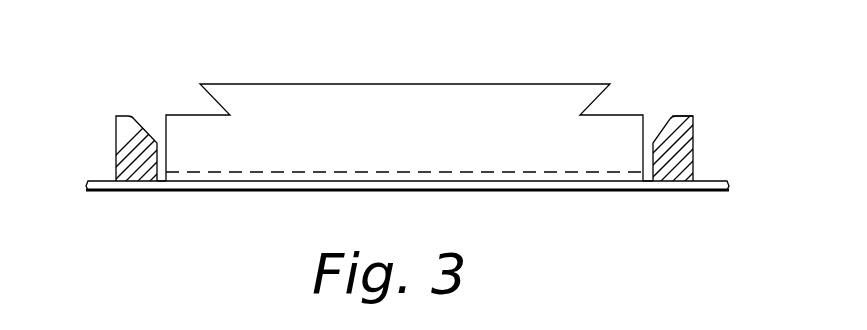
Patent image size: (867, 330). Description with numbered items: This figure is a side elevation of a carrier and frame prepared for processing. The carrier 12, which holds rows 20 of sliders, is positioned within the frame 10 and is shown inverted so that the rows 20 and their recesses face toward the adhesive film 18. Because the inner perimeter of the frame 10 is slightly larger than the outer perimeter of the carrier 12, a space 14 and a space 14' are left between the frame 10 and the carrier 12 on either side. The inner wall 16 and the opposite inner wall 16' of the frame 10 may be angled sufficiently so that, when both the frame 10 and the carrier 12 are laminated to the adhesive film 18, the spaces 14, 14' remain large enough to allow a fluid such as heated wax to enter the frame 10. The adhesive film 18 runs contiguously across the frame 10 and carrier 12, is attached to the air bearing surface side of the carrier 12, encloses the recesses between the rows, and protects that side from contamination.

The frame 10 is at (686, 155).
The carrier 12 is at (482, 93).
The space 14 is at (160, 112).
The space 14' is at (655, 109).
The inner wall 16 is at (125, 137).
The inner wall 16' is at (700, 75).
The adhesive film 18 is at (98, 190).
The rows 20 is at (328, 173).